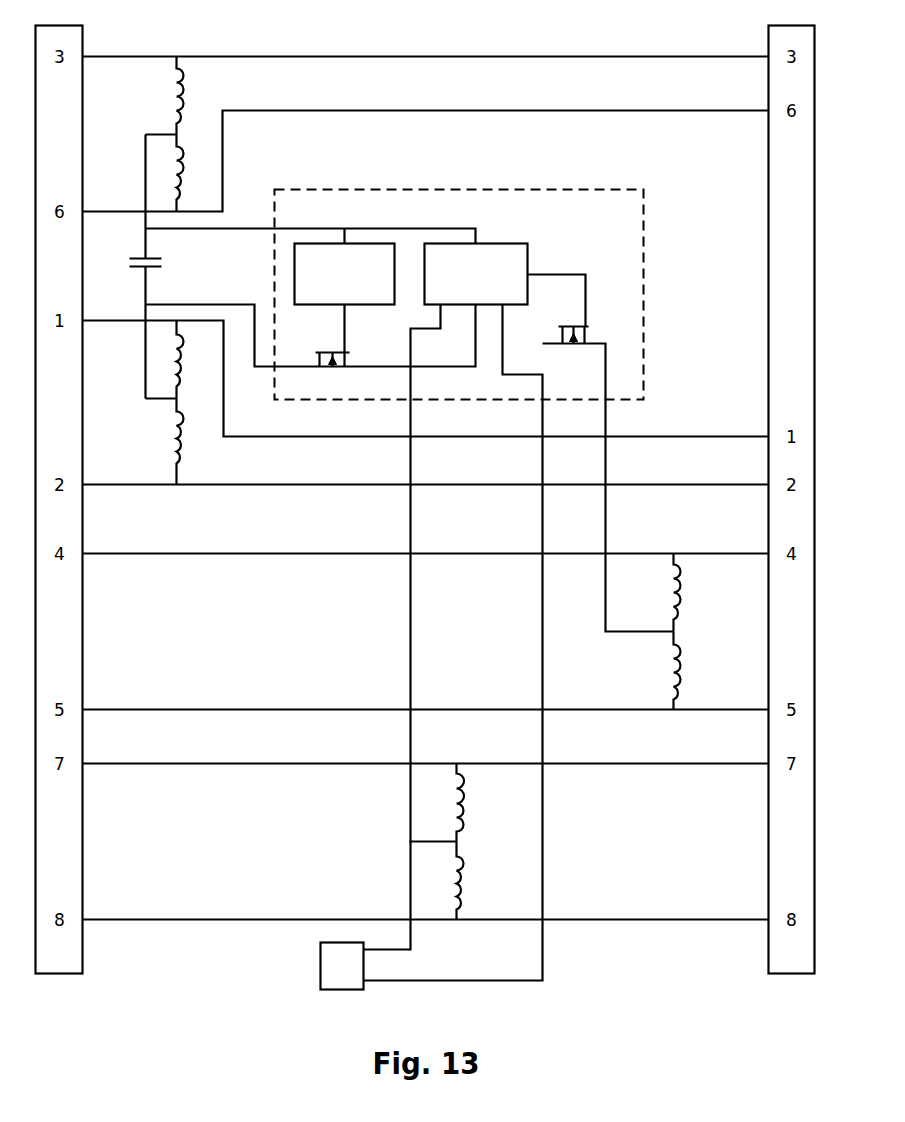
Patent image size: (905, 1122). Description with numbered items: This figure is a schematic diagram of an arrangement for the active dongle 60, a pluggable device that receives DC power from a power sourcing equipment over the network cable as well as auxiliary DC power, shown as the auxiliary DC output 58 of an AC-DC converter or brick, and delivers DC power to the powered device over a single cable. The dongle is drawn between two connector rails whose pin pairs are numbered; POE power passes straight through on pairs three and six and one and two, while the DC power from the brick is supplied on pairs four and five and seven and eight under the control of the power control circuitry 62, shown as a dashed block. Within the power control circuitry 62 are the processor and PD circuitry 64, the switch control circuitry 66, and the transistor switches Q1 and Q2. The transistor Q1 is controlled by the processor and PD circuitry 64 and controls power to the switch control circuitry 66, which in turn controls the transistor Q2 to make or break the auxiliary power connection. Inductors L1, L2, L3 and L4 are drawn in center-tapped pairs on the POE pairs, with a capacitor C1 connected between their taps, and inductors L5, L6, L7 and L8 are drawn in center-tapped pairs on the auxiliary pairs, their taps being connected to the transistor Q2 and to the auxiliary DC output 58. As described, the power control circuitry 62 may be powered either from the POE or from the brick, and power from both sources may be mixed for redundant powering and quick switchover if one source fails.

The auxiliary DC output 58 is at (342, 966).
The active dongle 60 is at (205, 996).
The power control circuitry 62 is at (455, 187).
The processor and PD circuitry 64 is at (345, 274).
The switch control circuitry 66 is at (476, 274).
The transistor Q1 is at (319, 336).
The transistor Q2 is at (559, 332).
The capacitor C1 is at (158, 264).
The inductor L1 is at (191, 96).
The inductor L2 is at (191, 173).
The inductor L3 is at (191, 360).
The inductor L4 is at (191, 442).
The inductor L5 is at (688, 593).
The inductor L6 is at (688, 671).
The inductor L7 is at (470, 803).
The inductor L8 is at (470, 881).